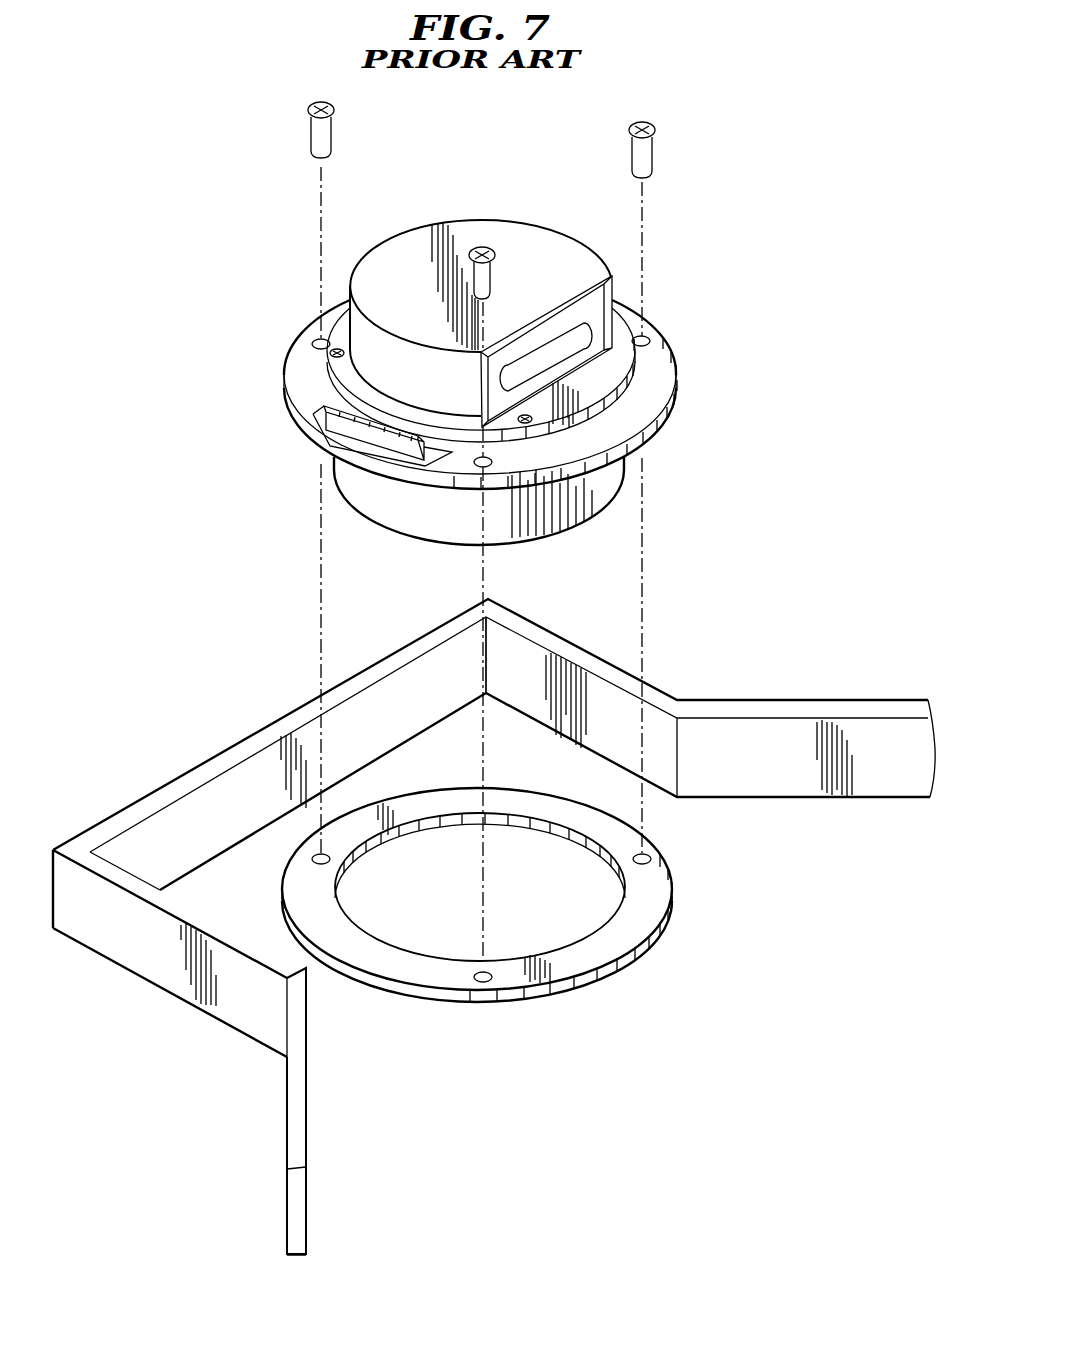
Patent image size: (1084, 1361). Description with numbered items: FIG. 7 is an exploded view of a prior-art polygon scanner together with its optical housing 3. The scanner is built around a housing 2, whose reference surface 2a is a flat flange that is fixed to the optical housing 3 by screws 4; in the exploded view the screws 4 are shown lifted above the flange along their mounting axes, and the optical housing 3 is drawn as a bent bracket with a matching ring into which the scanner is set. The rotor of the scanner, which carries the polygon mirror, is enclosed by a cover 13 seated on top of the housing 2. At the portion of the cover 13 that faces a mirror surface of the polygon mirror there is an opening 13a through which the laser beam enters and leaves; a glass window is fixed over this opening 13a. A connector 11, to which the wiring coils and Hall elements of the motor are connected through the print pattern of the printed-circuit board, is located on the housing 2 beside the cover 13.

The housing 2 is at (584, 489).
The reference surface 2a is at (662, 425).
The optical housing 3 is at (786, 675).
The screws 4 is at (331, 137).
The connector 11 is at (350, 427).
The cover 13 is at (586, 262).
The opening 13a is at (588, 333).